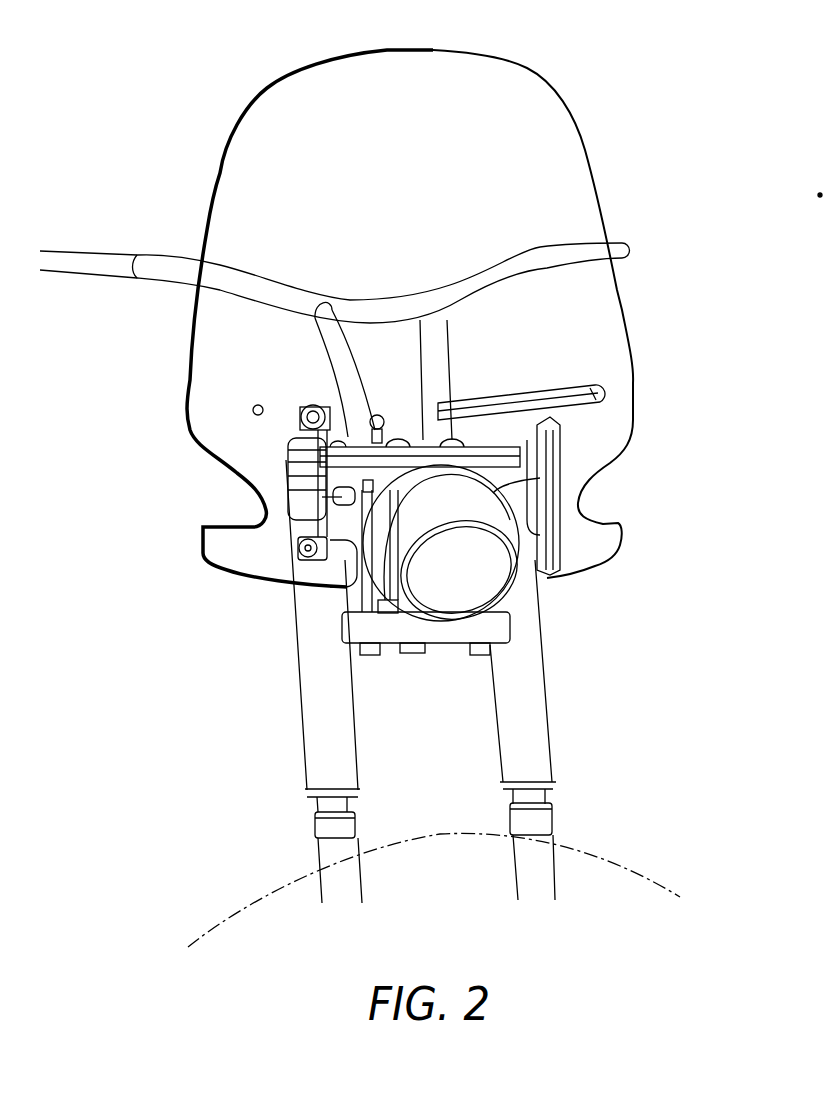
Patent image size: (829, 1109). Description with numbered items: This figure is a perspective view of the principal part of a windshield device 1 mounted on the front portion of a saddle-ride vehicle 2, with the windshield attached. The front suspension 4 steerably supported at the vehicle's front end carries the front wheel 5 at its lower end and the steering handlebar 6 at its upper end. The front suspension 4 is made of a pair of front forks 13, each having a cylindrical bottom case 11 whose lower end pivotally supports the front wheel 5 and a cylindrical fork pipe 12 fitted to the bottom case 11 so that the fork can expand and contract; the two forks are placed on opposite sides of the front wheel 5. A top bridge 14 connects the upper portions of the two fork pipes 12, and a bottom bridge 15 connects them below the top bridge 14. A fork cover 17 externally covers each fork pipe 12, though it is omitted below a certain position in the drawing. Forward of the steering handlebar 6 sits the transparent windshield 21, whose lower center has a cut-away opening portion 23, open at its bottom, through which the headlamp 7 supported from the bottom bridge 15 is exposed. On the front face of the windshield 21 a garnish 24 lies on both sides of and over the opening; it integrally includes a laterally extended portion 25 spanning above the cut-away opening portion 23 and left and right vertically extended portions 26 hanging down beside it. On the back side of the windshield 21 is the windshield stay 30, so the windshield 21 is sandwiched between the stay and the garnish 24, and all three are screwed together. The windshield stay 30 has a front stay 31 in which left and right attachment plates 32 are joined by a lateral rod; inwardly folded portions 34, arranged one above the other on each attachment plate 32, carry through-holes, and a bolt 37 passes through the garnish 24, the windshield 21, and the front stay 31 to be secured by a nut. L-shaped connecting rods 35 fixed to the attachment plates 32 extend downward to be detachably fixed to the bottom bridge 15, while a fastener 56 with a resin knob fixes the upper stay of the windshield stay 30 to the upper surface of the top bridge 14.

The windshield device 1 is at (594, 90).
The saddle-ride vehicle 2 is at (140, 820).
The front suspension 4 is at (587, 762).
The front wheel 5 is at (657, 887).
The steering handlebar 6 is at (632, 240).
The headlamp 7 is at (490, 562).
The bottom case 11 is at (318, 880).
The fork pipe 12 is at (320, 802).
The front fork 13 is at (471, 846).
The top bridge 14 is at (414, 440).
The bottom bridge 15 is at (490, 630).
The fork cover 17 is at (316, 743).
The windshield 21 is at (232, 130).
The cut-away opening portion 23 is at (493, 493).
The garnish 24 is at (562, 388).
The laterally extended portion 25 is at (604, 392).
The vertically extended portion 26 is at (560, 452).
The windshield stay 30 is at (302, 522).
The front stay 31 is at (325, 482).
The attachment plate 32 is at (318, 498).
The inwardly folded portion 34 is at (300, 408).
The connecting rod 35 is at (360, 604).
The bolt 37 is at (300, 415).
The fastener 56 is at (290, 444).